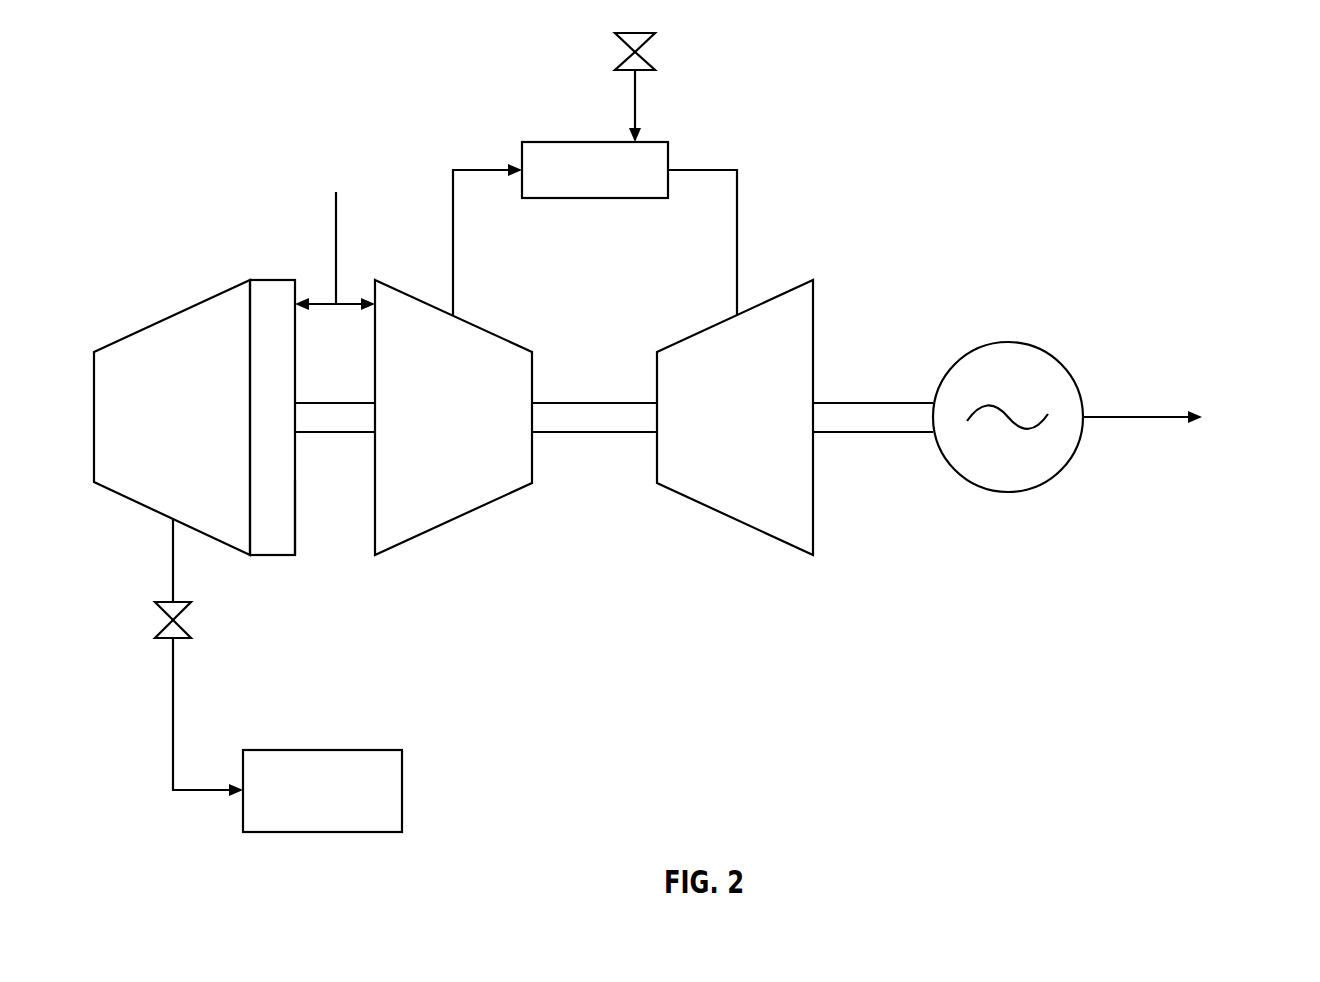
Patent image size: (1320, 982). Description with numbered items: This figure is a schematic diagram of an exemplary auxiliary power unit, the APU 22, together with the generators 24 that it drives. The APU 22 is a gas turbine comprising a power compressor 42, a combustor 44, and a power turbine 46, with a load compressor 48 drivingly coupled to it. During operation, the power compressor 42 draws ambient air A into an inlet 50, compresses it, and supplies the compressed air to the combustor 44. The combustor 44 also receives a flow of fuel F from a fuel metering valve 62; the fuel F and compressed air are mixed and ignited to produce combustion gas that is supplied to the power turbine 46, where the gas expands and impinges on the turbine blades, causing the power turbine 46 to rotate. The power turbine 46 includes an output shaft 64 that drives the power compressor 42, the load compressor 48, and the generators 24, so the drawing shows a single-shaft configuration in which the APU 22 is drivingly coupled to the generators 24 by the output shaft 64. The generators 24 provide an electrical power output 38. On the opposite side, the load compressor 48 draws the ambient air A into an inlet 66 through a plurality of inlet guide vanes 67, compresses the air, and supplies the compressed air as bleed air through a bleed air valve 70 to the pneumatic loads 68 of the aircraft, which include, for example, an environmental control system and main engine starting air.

The APU 22 is at (594, 367).
The generators 24 is at (1052, 356).
The electrical power output 38 is at (1142, 417).
The power compressor 42 is at (488, 332).
The combustor 44 is at (580, 142).
The power turbine 46 is at (698, 333).
The load compressor 48 is at (172, 316).
The inlet 50 is at (375, 350).
The fuel metering valve 62 is at (650, 55).
The output shaft 64 is at (593, 403).
The inlet 66 is at (295, 517).
The inlet guide vanes 67 is at (262, 280).
The pneumatic loads 68 is at (323, 750).
The bleed air valve 70 is at (185, 630).
The ambient air A is at (337, 250).
The fuel F is at (637, 103).